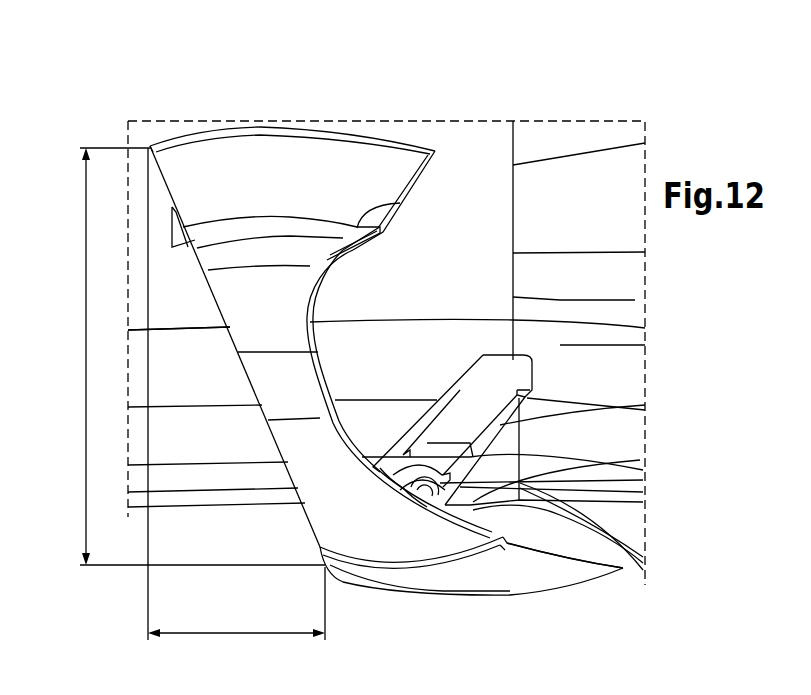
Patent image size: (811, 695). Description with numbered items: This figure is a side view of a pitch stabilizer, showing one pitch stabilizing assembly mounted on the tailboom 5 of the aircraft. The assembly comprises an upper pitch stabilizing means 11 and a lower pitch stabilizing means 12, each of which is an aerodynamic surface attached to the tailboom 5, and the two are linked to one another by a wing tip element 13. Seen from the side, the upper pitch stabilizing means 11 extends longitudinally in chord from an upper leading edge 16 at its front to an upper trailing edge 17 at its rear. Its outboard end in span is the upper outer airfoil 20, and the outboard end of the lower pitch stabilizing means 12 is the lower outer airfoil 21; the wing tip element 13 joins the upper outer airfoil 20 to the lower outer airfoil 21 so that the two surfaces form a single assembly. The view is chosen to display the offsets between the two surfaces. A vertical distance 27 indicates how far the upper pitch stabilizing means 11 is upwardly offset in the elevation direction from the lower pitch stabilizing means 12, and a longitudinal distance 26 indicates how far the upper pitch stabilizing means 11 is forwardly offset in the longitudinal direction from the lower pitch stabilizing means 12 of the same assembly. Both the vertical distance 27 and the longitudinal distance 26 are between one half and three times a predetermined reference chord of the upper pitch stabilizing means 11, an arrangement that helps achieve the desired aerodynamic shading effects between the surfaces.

The tailboom 5 is at (222, 437).
The upper pitch stabilizing means 11 is at (262, 150).
The lower pitch stabilizing means 12 is at (425, 583).
The wing tip element 13 is at (307, 389).
The upper leading edge 16 is at (160, 187).
The upper trailing edge 17 is at (423, 172).
The upper outer airfoil 20 is at (383, 207).
The lower outer airfoil 21 is at (496, 540).
The longitudinal distance 26 is at (222, 633).
The vertical distance 27 is at (86, 321).